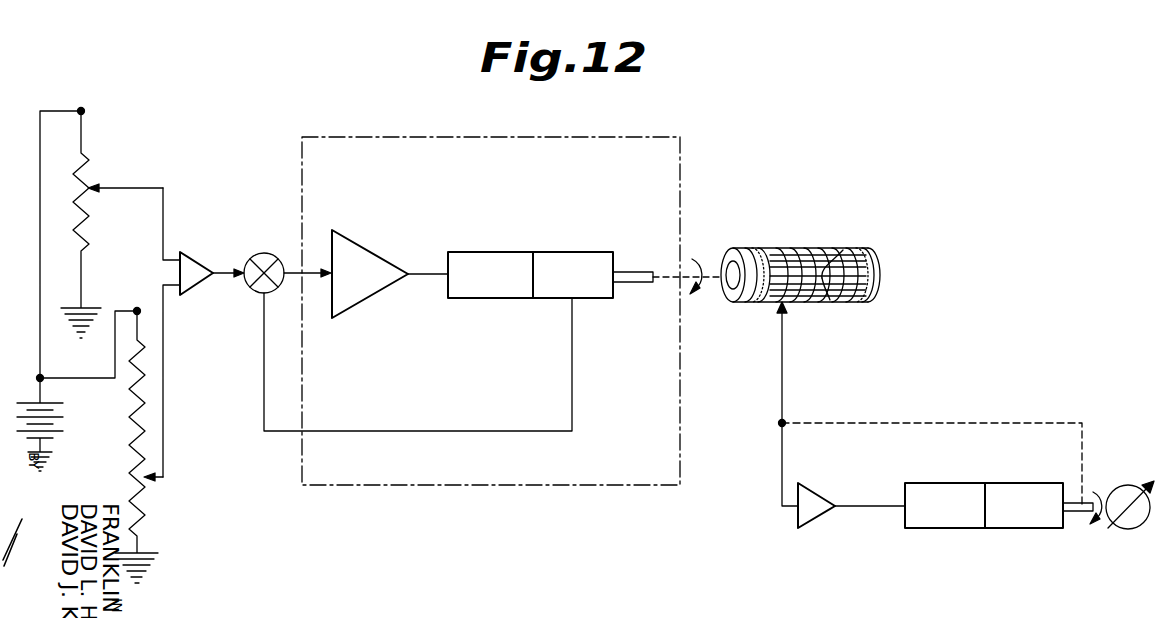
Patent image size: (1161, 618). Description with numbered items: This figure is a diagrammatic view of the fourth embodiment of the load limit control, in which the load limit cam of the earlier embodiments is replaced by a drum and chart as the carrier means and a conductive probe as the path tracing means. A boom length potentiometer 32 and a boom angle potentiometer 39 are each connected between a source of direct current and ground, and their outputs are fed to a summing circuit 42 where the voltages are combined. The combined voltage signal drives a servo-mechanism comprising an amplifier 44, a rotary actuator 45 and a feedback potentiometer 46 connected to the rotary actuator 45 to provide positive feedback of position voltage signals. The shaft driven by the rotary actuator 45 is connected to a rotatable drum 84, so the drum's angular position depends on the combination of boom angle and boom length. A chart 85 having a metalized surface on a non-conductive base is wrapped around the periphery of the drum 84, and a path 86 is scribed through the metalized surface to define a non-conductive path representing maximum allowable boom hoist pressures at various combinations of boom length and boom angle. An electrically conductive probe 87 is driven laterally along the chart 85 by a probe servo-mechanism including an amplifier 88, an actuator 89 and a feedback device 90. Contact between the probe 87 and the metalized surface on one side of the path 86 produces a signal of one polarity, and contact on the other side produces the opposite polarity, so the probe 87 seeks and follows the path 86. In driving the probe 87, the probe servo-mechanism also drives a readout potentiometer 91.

The boom length potentiometer 32 is at (90, 158).
The boom angle potentiometer 39 is at (150, 505).
The summing circuit 42 is at (201, 262).
The amplifier 44 is at (375, 257).
The rotary actuator 45 is at (501, 252).
The feedback potentiometer 46 is at (579, 252).
The rotatable drum 84 is at (880, 252).
The chart 85 is at (843, 250).
The path 86 is at (830, 300).
The electrically conductive probe 87 is at (776, 305).
The amplifier 88 is at (816, 525).
The actuator 89 is at (955, 528).
The feedback device 90 is at (1025, 530).
The readout potentiometer 91 is at (1130, 530).